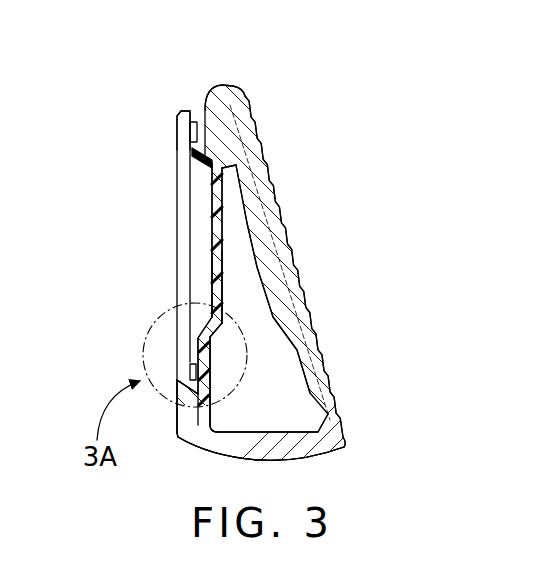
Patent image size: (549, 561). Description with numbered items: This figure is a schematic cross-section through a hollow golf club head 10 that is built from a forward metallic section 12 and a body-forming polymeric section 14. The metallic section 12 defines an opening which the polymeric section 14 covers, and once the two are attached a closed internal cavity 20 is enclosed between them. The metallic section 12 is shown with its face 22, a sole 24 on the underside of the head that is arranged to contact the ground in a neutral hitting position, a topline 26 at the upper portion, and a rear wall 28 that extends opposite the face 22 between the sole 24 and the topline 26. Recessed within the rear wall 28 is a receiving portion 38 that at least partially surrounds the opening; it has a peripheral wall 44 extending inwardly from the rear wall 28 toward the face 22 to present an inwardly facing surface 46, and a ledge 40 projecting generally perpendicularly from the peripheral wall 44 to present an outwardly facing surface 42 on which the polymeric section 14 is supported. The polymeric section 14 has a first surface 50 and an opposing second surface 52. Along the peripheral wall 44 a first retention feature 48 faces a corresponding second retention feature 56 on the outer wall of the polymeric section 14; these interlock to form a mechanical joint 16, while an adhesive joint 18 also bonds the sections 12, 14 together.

The golf club head 10 is at (80, 90).
The metallic section 12 is at (238, 135).
The polymeric section 14 is at (214, 205).
The mechanical joint 16 is at (192, 110).
The adhesive joint 18 is at (175, 111).
The closed internal cavity 20 is at (292, 412).
The face 22 is at (299, 282).
The sole 24 is at (278, 463).
The topline 26 is at (212, 86).
The rear wall 28 is at (177, 130).
The receiving portion 38 is at (242, 122).
The ledge 40 is at (205, 150).
The outwardly facing surface 42 is at (191, 152).
The peripheral wall 44 is at (177, 233).
The inwardly facing surface 46 is at (190, 143).
The first retention feature 48 is at (178, 400).
The first surface 50 is at (273, 297).
The second surface 52 is at (214, 278).
The second retention feature 56 is at (196, 365).